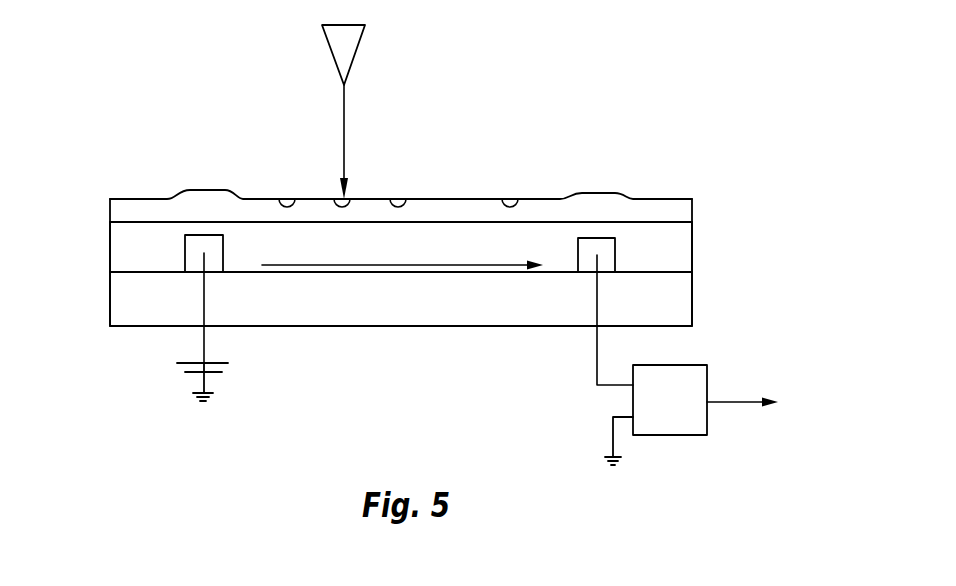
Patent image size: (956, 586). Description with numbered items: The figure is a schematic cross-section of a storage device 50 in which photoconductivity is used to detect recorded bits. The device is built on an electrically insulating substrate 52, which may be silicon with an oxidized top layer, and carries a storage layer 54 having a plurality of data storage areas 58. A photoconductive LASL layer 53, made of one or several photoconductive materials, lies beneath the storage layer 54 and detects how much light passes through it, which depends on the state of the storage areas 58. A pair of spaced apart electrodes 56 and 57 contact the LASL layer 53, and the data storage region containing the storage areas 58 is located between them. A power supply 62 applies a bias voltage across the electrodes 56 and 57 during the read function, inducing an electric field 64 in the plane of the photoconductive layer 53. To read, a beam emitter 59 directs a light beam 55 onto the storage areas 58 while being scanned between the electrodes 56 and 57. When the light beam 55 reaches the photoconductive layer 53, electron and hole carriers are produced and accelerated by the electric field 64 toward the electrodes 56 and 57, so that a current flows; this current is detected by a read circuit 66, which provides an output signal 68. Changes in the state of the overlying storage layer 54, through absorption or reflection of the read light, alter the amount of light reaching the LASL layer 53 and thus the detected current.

The storage device 50 is at (86, 104).
The electrically insulating substrate 52 is at (693, 301).
The photoconductive LASL layer 53 is at (693, 250).
The storage layer 54 is at (128, 198).
The light beam 55 is at (345, 118).
The electrode 56 is at (185, 259).
The electrode 57 is at (617, 252).
The data storage areas 58 is at (287, 198).
The beam emitter 59 is at (331, 53).
The power supply 62 is at (190, 363).
The electric field 64 is at (395, 262).
The read circuit 66 is at (688, 365).
The output signal 68 is at (742, 402).